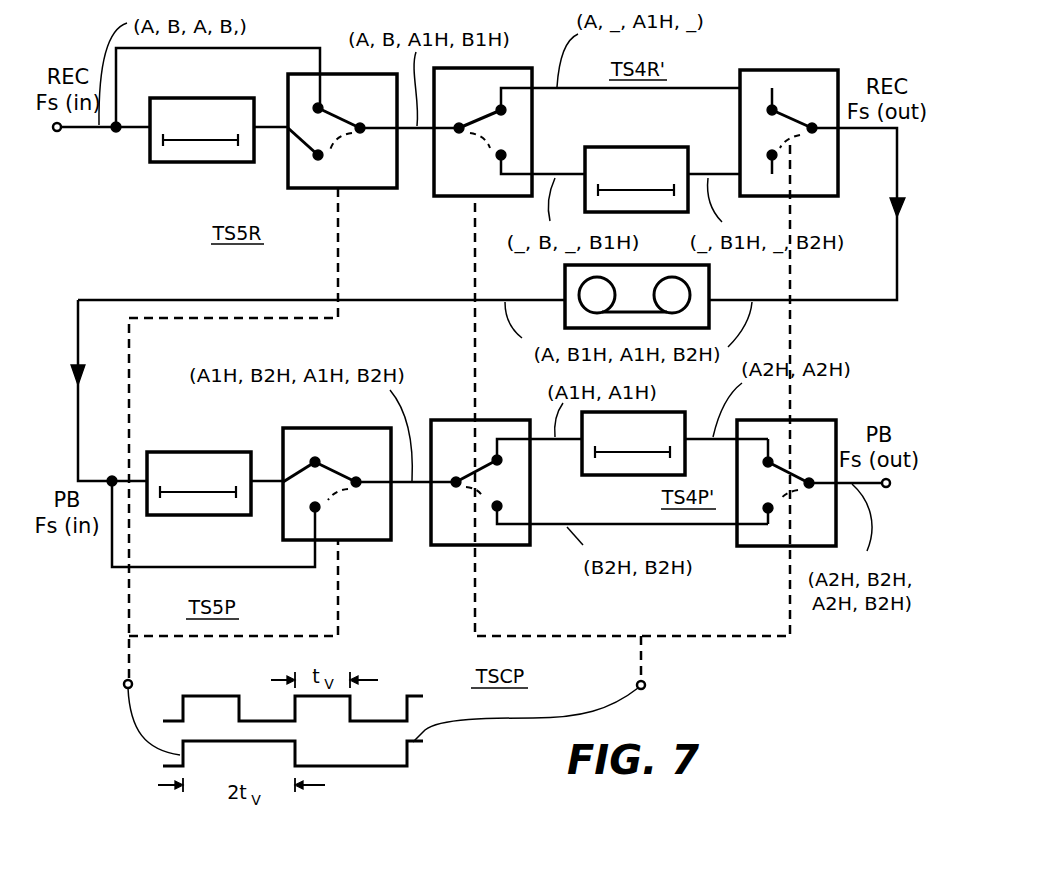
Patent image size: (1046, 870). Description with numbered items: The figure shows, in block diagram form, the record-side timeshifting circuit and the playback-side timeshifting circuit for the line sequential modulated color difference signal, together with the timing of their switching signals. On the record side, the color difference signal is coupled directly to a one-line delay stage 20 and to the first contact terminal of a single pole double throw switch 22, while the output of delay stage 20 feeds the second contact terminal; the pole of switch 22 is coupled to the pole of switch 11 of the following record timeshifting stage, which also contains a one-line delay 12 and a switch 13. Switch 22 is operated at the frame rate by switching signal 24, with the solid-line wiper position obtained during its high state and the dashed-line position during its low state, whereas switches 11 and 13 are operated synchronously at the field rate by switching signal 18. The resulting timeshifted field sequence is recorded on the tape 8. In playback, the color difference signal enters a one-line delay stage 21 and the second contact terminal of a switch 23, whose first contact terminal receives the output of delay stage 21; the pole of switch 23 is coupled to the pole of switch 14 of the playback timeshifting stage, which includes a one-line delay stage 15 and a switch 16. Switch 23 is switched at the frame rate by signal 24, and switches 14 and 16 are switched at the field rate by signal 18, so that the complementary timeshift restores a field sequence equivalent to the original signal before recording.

The tape 8 is at (710, 280).
The switch 11 is at (440, 197).
The 1 H line delay 12 is at (636, 165).
The switch 13 is at (789, 120).
The switch 14 is at (599, 468).
The 1 H line delay stage 15 is at (633, 460).
The switch 16 is at (786, 468).
The switching signal 18 is at (220, 693).
The 1 H line delay stage 20 is at (202, 116).
The 1 H line delay stage 21 is at (199, 469).
The single pole double throw switch 22 is at (287, 189).
The single pole double throw switch 23 is at (365, 542).
The switching signal 24 is at (410, 757).